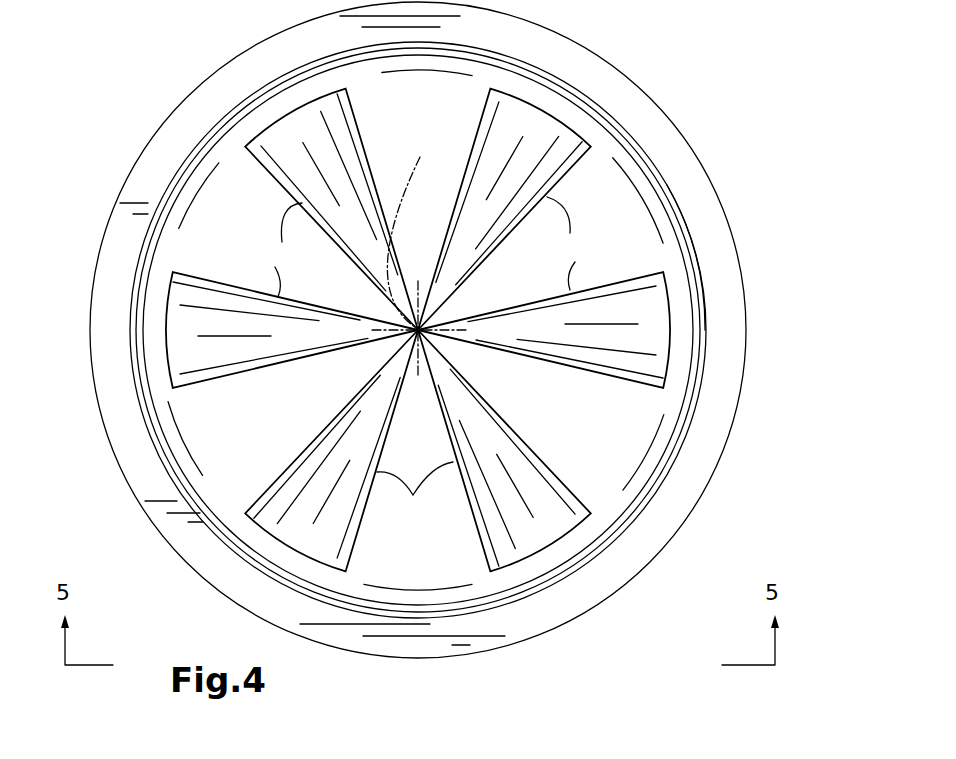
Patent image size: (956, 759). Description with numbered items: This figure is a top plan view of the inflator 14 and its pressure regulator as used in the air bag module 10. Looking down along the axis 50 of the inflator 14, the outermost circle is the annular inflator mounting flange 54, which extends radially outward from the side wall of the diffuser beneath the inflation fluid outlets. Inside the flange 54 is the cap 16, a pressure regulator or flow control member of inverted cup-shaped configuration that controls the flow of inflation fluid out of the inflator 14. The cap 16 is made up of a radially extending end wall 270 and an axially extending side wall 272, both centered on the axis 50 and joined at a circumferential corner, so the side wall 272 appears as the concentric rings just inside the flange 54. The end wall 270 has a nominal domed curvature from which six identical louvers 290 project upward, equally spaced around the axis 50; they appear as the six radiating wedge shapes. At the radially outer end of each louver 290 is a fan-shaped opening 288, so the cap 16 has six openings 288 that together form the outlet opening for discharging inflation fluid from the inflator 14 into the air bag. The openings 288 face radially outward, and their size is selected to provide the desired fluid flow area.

The air bag module 10 is at (92, 448).
The inflator 14 is at (90, 335).
The cap 16 is at (142, 252).
The axis 50 is at (419, 254).
The inflator mounting flange 54 is at (117, 288).
The end wall 270 is at (610, 202).
The side wall 272 is at (667, 185).
The fan-shaped openings 288 is at (300, 107).
The louvers 290 is at (425, 361).